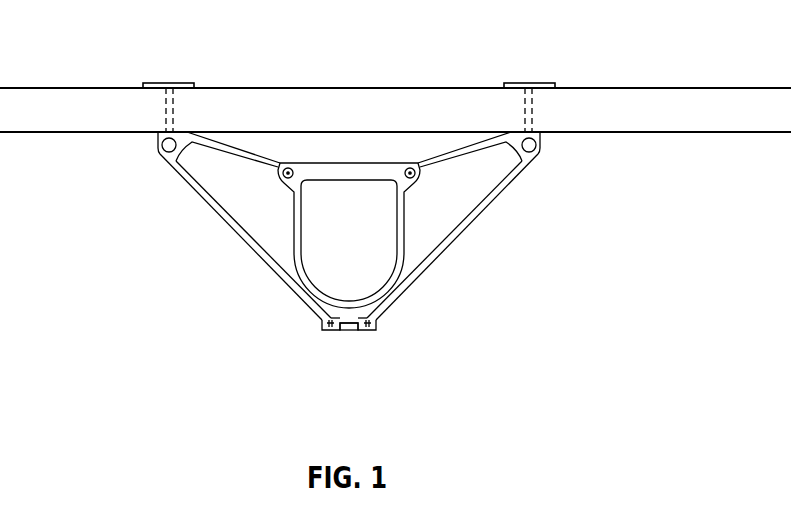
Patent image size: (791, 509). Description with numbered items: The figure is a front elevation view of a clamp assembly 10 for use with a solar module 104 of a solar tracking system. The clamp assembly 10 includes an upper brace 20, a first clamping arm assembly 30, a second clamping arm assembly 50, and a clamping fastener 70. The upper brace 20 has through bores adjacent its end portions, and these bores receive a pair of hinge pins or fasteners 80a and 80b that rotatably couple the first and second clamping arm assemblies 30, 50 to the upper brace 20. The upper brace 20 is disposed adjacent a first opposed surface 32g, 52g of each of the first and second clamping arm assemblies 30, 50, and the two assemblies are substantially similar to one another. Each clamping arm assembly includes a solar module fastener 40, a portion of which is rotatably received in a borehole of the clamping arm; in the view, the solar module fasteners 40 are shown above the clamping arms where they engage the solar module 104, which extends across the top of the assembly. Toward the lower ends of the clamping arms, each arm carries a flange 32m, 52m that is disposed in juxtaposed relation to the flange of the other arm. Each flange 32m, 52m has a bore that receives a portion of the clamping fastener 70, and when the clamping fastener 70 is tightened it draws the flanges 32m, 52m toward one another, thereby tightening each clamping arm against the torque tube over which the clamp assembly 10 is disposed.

The clamp assembly 10 is at (345, 214).
The upper brace 20 is at (372, 165).
The first clamping arm assembly 30 is at (191, 244).
The first opposed surface 32g is at (238, 235).
The flange 32m is at (323, 318).
The solar module fastener 40 is at (164, 82).
The second clamping arm assembly 50 is at (465, 244).
The first opposed surface 52g is at (505, 183).
The flange 52m is at (373, 318).
The clamping fastener 70 is at (347, 330).
The hinge pin 80a is at (289, 164).
The hinge pin 80b is at (409, 164).
The solar module 104 is at (642, 84).